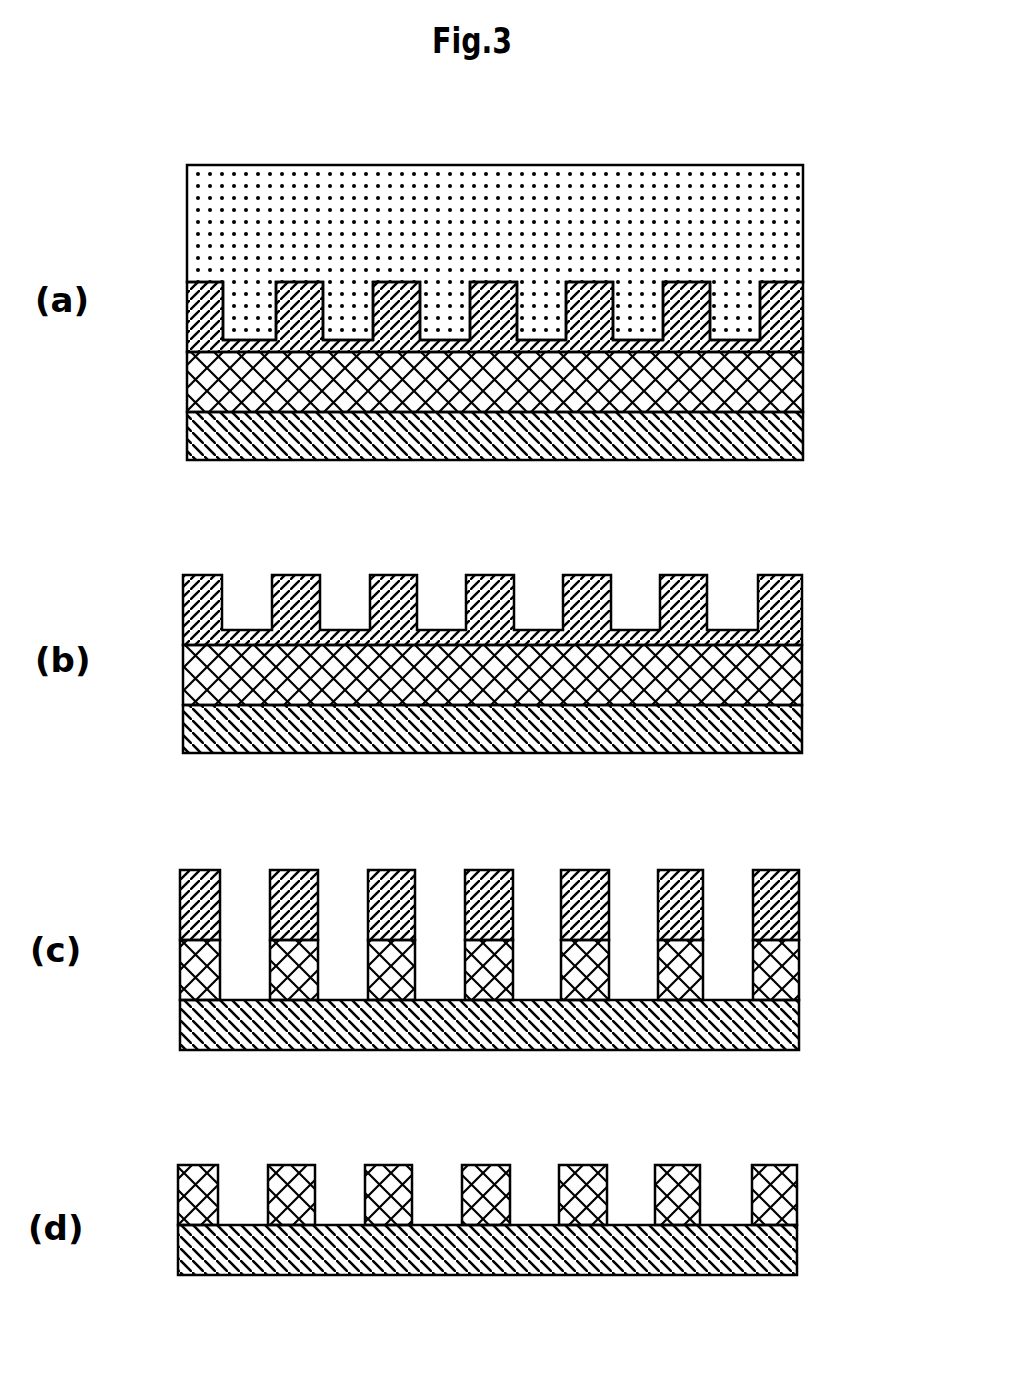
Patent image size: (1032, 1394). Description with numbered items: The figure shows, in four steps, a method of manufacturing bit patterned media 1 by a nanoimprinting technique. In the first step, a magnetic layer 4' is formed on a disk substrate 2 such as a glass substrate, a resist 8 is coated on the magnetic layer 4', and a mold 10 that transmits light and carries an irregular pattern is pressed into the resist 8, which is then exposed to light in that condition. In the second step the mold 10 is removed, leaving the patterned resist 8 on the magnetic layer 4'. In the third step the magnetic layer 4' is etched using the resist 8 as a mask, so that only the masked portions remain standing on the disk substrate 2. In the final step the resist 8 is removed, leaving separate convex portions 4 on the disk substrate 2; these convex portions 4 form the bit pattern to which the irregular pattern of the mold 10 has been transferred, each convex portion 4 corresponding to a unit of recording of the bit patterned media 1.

The bit patterned media 1 is at (792, 1150).
The disk substrate 2 is at (800, 433).
The convex portion 4 is at (537, 1082).
The magnetic layer 4' is at (545, 528).
The resist 8 is at (797, 313).
The mold 10 is at (793, 225).